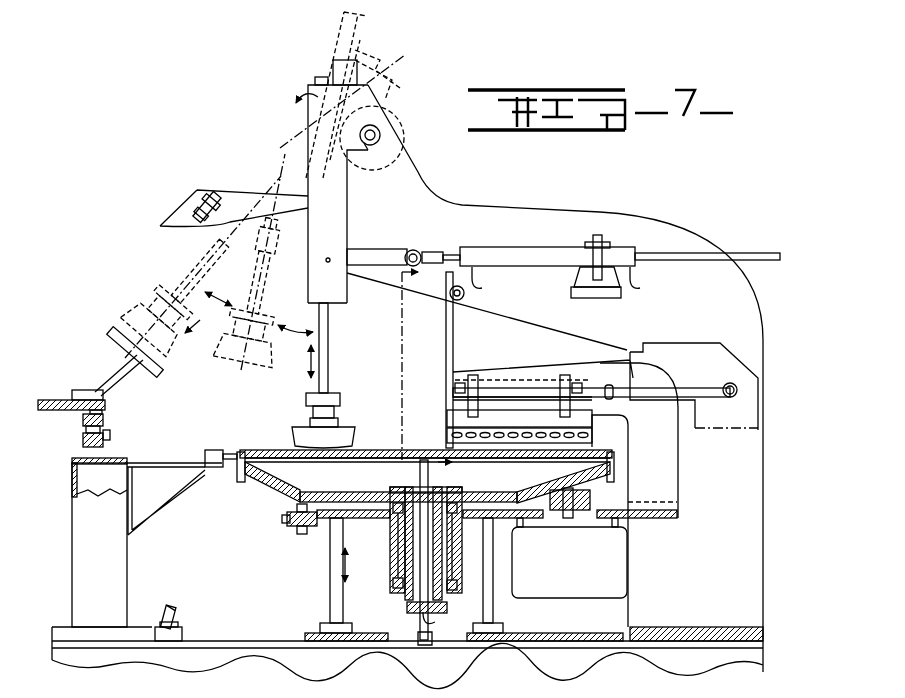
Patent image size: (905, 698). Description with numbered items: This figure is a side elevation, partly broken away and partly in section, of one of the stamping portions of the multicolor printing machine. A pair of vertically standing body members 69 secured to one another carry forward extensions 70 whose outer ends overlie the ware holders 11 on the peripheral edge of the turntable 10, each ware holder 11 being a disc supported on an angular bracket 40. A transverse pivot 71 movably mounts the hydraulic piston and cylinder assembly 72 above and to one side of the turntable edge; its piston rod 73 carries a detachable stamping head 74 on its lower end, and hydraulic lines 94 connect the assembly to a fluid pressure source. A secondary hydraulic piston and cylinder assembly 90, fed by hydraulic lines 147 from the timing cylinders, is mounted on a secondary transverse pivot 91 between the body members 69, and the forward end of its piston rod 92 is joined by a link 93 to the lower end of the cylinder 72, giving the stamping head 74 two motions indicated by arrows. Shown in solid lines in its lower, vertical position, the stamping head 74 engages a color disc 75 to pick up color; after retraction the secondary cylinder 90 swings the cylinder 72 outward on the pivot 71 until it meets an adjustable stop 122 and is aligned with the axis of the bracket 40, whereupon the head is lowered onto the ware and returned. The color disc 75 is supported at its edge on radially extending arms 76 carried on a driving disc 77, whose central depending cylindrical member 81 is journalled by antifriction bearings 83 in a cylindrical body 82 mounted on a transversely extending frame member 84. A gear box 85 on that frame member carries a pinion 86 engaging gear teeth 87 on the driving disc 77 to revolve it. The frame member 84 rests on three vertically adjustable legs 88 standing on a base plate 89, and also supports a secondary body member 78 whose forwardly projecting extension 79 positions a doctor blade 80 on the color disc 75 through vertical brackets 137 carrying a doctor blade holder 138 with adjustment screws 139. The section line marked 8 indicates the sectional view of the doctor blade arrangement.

The section line 8- 8 is at (432, 370).
The turntable 10 is at (104, 400).
The ware holder 11 is at (110, 340).
The angular bracket 40 is at (106, 370).
The body member 69 is at (734, 316).
The forward extension 70 is at (220, 197).
The transverse pivot 71 is at (380, 133).
The hydraulic piston and cylinder assembly 72 is at (341, 215).
The piston rod 73 is at (345, 25).
The stamping head 74 is at (168, 352).
The color disc 75 is at (282, 450).
The radially extending arm 76 is at (415, 470).
The driving disc 77 is at (466, 492).
The secondary body member 78 is at (665, 470).
The forwardly projecting extension 79 is at (498, 372).
The doctor blade 80 is at (590, 448).
The depending cylindrical member 81 is at (462, 550).
The cylindrical body 82 is at (462, 572).
The antifriction bearings 83 is at (393, 588).
The transversely extending frame member 84 is at (366, 520).
The gear box 85 is at (565, 577).
The pinion 86 is at (586, 500).
The gear teeth 87 is at (543, 475).
The vertically adjustable legs 88 is at (330, 582).
The base plate 89 is at (302, 634).
The secondary hydraulic piston and cylinder assembly 90 is at (492, 247).
The secondary transverse pivot 91 is at (604, 252).
The piston rod 92 is at (460, 247).
The link 93 is at (365, 252).
The hydraulic lines 94 is at (298, 104).
The adjustable stop 122 is at (200, 222).
The vertical brackets 137 is at (565, 396).
The doctor blade holder 138 is at (450, 422).
The adjustment screws 139 is at (455, 438).
The hydraulic lines 147 is at (484, 284).